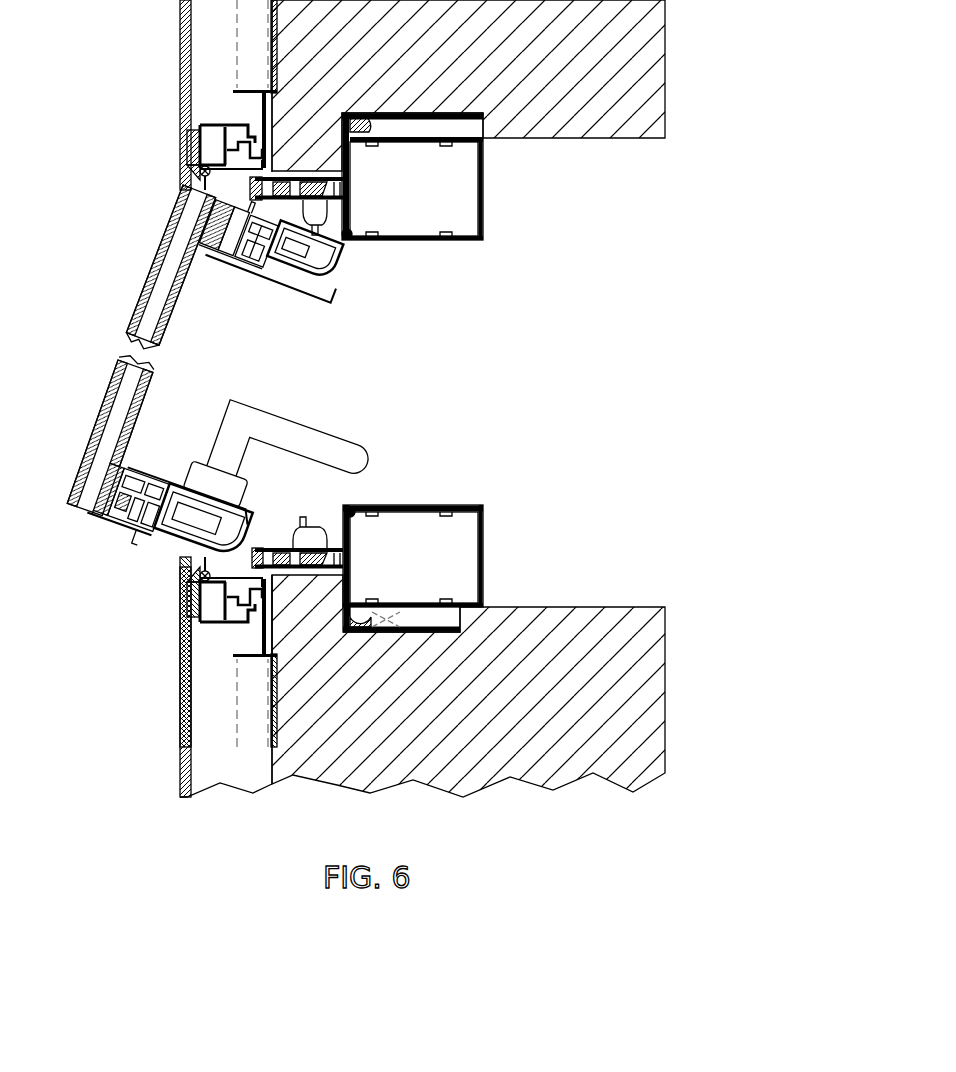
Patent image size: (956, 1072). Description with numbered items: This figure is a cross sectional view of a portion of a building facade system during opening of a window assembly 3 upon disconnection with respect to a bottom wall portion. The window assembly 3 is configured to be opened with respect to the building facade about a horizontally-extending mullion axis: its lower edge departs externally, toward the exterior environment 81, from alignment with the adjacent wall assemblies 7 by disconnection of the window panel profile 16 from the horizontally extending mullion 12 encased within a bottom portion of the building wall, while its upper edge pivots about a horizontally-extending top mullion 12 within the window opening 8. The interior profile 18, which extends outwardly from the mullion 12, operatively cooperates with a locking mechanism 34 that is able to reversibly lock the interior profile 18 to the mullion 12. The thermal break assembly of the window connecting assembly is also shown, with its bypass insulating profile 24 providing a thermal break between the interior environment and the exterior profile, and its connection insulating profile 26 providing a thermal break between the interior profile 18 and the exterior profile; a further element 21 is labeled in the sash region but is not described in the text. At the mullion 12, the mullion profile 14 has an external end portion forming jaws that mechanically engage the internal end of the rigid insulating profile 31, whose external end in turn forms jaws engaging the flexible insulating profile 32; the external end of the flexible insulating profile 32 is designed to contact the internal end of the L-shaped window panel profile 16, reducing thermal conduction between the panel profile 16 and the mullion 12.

The wall assembly 7 is at (165, 90).
The exterior environment 81 is at (95, 294).
The window opening 8 is at (564, 364).
The mullion 12 is at (405, 244).
The window assembly 3 is at (95, 425).
The locking mechanism 34 is at (190, 440).
The bypass insulating profile 24 is at (128, 484).
The sash profile 21 is at (140, 490).
The connection insulating profile 26 is at (133, 514).
The window panel profile 16 is at (137, 540).
The interior profile 18 is at (168, 532).
The rigid insulating profile 31 is at (286, 558).
The flexible insulating profile 32 is at (266, 560).
The mullion profile 14 is at (318, 558).